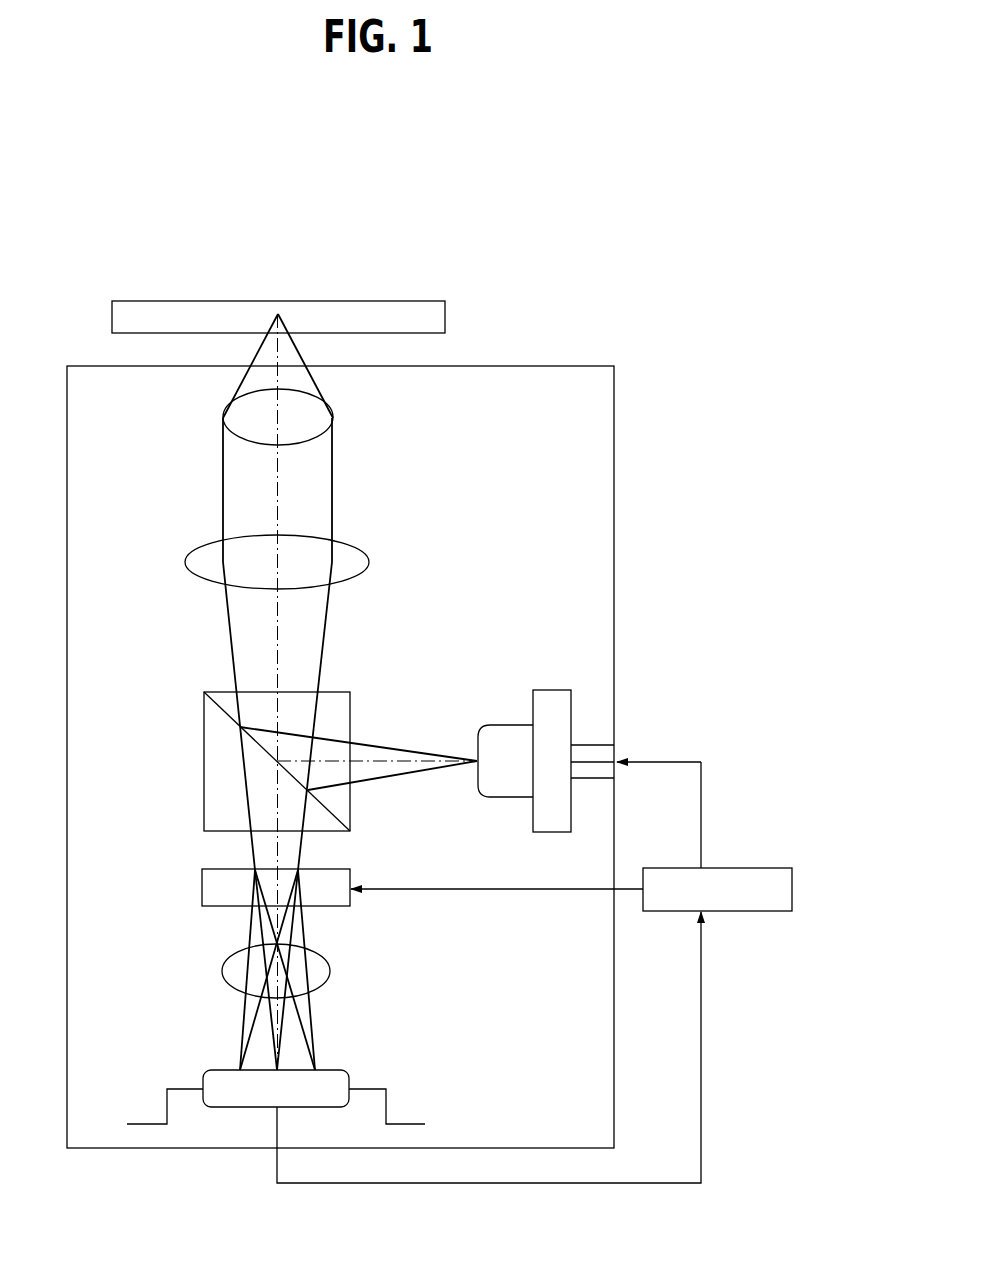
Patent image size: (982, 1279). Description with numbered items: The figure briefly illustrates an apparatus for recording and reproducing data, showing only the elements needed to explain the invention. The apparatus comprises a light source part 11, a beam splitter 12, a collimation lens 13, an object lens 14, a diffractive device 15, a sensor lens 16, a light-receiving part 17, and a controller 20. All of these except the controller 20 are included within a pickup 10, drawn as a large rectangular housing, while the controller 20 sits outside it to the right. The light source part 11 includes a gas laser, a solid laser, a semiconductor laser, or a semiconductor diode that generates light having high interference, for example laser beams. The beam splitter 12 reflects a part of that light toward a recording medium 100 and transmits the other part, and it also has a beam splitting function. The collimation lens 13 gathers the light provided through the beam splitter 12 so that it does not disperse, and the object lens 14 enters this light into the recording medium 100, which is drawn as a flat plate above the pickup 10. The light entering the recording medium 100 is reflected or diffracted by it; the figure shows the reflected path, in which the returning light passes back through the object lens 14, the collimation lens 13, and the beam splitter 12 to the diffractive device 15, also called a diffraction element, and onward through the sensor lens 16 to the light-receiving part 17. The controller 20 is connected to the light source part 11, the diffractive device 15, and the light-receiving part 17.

The recording medium 100 is at (437, 320).
The pickup 10 is at (607, 477).
The light source part 11 is at (556, 696).
The beam splitter 12 is at (343, 703).
The collimation lens 13 is at (369, 562).
The object lens 14 is at (322, 417).
The diffractive device 15 is at (202, 887).
The sensor lens 16 is at (330, 973).
The light-receiving part 17 is at (343, 1077).
The controller 20 is at (792, 889).